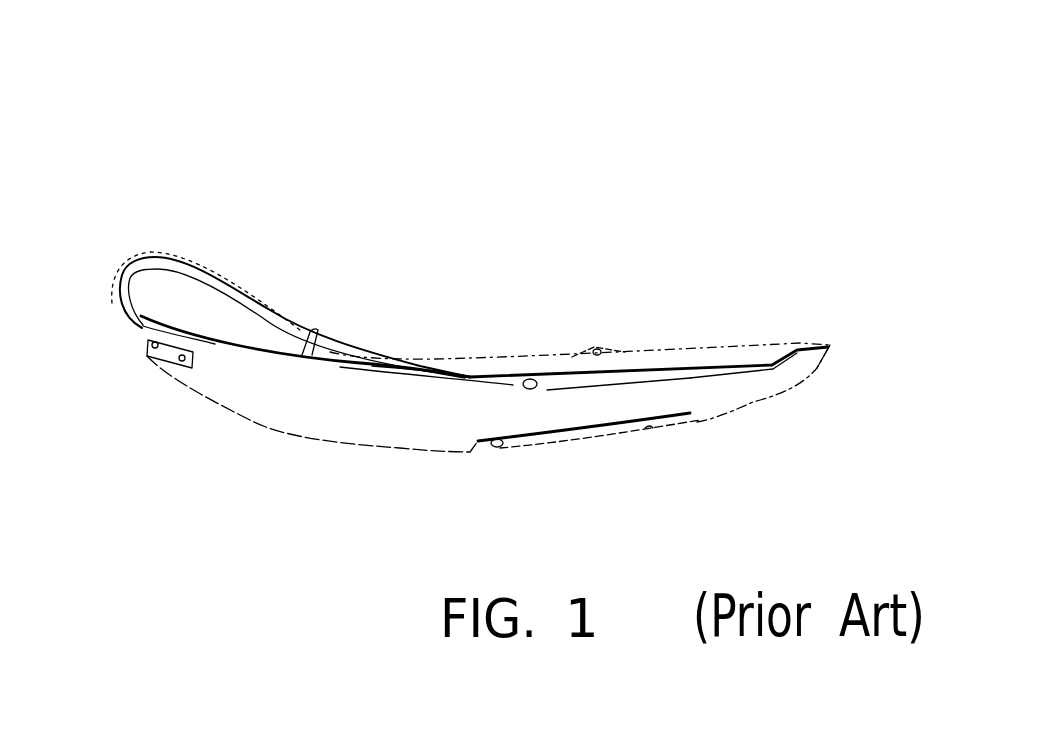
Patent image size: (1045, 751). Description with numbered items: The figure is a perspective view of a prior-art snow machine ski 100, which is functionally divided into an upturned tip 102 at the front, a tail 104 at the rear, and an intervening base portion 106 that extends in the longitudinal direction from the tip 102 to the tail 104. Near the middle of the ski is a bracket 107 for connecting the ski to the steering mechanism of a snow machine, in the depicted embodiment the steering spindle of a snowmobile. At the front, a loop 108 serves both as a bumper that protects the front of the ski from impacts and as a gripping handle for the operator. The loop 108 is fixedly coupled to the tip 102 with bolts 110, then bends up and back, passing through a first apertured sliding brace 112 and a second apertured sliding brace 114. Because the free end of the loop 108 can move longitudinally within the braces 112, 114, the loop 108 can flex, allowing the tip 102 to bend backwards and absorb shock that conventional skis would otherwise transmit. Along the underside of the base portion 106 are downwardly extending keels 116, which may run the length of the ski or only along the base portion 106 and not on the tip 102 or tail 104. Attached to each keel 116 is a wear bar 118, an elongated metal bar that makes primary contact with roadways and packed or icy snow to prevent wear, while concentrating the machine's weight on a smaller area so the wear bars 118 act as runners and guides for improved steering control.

The snow machine ski 100 is at (135, 88).
The upturned tip 102 is at (201, 392).
The tail 104 is at (805, 378).
The base portion 106 is at (520, 338).
The bracket 107 is at (595, 348).
The loop 108 is at (193, 255).
The bolts 110 is at (180, 358).
The first apertured sliding brace 112 is at (318, 328).
The second apertured sliding brace 114 is at (384, 358).
The keel 116 is at (735, 350).
The wear bar 118 is at (593, 382).